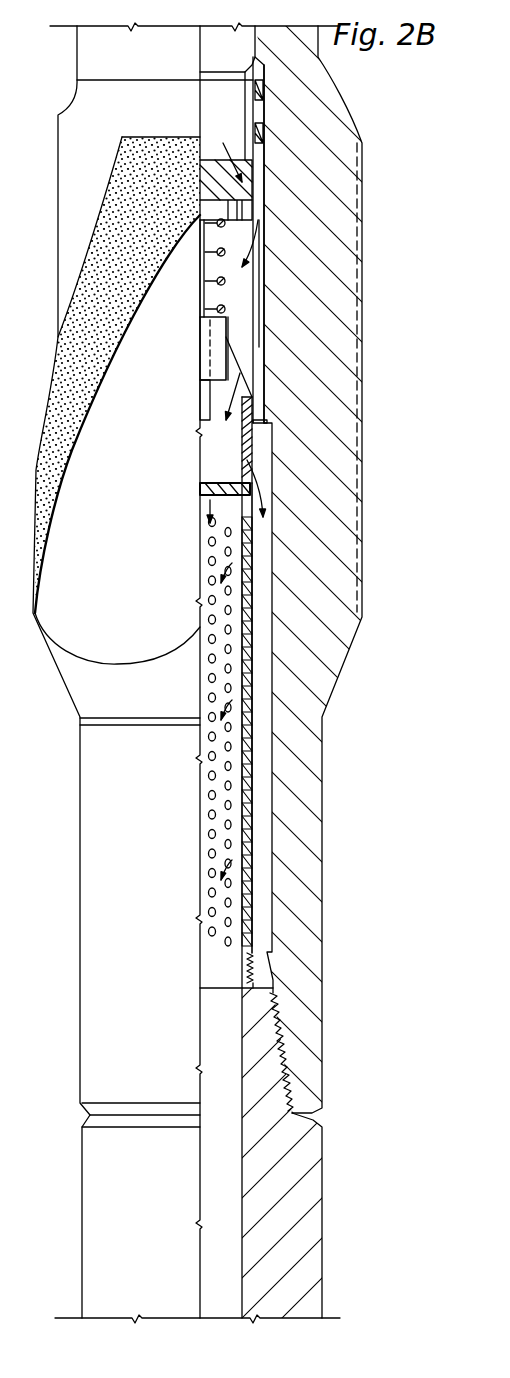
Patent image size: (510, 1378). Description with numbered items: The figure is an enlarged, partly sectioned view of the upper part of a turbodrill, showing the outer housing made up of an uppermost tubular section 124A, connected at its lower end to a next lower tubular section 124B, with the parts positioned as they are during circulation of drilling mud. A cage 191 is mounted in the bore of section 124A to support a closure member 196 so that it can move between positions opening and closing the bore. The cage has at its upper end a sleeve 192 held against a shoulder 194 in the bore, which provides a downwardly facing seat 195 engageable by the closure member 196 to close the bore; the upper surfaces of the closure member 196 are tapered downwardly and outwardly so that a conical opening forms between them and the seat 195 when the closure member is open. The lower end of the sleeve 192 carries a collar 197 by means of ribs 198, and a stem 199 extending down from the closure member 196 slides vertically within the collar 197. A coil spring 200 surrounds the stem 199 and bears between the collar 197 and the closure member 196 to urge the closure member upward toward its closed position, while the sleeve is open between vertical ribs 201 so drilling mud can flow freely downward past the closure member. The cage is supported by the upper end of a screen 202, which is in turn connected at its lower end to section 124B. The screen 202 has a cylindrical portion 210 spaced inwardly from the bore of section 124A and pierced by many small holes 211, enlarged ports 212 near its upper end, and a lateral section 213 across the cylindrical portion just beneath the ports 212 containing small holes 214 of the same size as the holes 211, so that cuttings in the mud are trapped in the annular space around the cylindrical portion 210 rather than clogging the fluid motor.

The uppermost tubular section 124A is at (322, 741).
The lower tubular section 124B is at (322, 1192).
The cage 191 is at (266, 237).
The sleeve 192 is at (242, 92).
The shoulder 194 is at (252, 65).
The seat 195 is at (263, 175).
The closure member 196 is at (248, 192).
The collar 197 is at (228, 328).
The ribs 198 is at (240, 365).
The stem 199 is at (207, 297).
The coil spring 200 is at (210, 252).
The vertical ribs 201 is at (262, 298).
The screen 202 is at (237, 685).
The cylindrical portion 210 is at (242, 803).
The small holes 211 is at (248, 832).
The enlarged ports 212 is at (242, 453).
The lateral section 213 is at (223, 483).
The small holes 214 is at (212, 483).